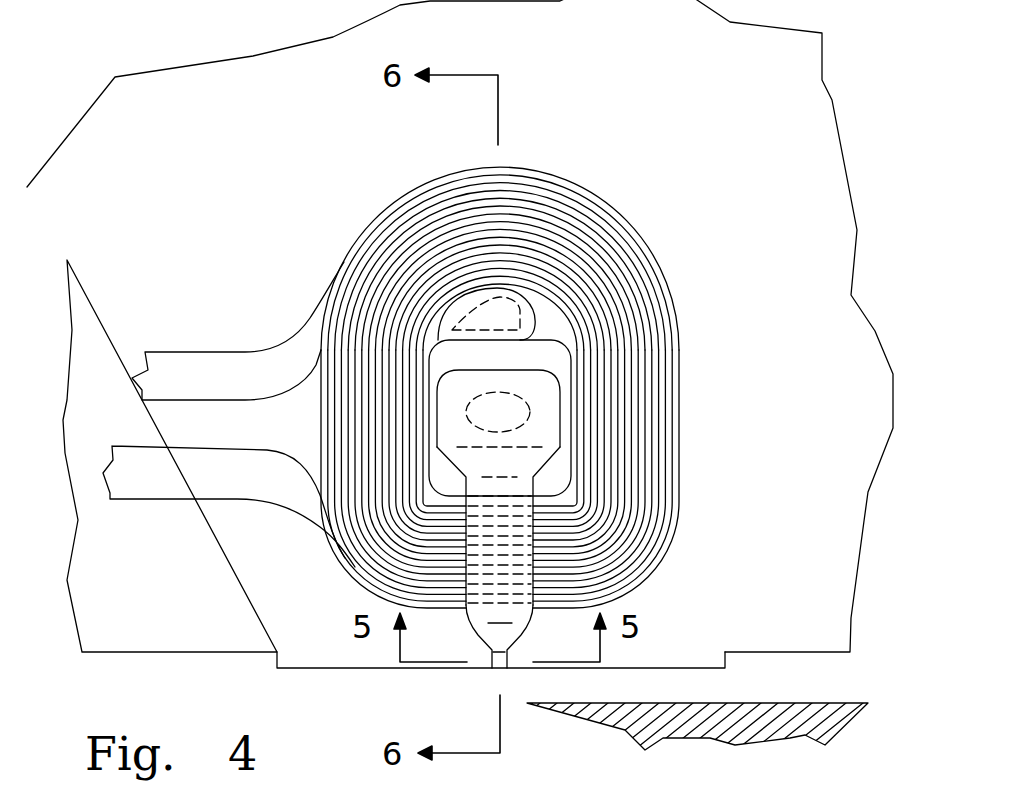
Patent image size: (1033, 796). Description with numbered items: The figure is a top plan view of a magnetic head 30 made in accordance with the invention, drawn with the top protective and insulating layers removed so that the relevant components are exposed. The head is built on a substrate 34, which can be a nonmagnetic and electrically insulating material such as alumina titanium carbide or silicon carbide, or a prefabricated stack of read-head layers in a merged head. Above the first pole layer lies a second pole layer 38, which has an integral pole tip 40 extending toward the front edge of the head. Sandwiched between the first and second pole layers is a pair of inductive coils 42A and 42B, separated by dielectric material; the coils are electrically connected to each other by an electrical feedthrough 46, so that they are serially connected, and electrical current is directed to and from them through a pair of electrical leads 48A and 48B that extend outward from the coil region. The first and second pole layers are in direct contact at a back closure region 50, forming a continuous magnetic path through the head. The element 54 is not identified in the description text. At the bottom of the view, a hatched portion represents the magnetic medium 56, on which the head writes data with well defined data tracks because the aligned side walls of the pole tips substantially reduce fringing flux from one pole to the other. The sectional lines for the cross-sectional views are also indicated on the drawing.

The magnetic head 30 is at (250, 192).
The substrate 34 is at (836, 471).
The second pole layer 38 is at (464, 613).
The pole tip 40 is at (488, 660).
The inductive coil 42A is at (352, 247).
The inductive coil 42B is at (652, 535).
The electrical feedthrough 46 is at (490, 318).
The electrical lead 48A is at (193, 365).
The electrical lead 48B is at (180, 482).
The back closure region 50 is at (502, 412).
The step edge 54 is at (365, 670).
The magnetic medium 56 is at (826, 703).